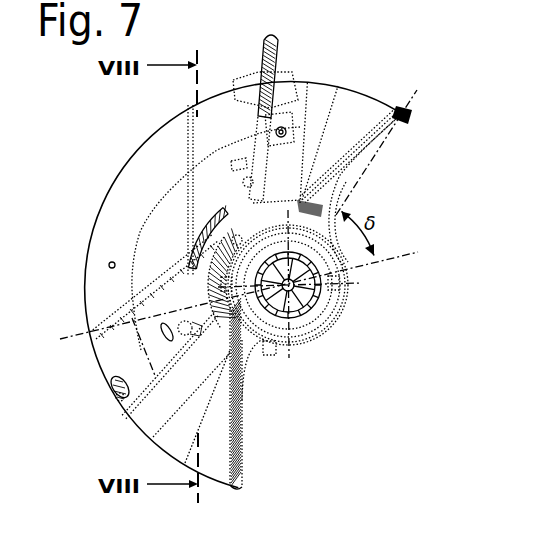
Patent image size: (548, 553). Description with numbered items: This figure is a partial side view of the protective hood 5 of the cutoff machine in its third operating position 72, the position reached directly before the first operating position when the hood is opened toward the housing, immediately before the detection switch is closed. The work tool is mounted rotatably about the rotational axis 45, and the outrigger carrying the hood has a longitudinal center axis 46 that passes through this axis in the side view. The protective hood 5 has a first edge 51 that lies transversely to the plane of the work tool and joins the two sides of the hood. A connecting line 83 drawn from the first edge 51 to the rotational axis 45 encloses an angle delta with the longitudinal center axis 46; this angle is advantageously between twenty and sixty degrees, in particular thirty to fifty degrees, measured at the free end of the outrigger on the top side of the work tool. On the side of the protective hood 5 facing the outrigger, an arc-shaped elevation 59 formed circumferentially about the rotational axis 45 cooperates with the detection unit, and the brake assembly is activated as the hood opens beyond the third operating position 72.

The protective hood 5 is at (321, 90).
The connecting line 83 is at (371, 163).
The first edge 51 is at (397, 112).
The longitudinal center axis 46 is at (399, 257).
The rotational axis 45 is at (297, 253).
The elevation 59 is at (200, 236).
The third operating position 72 is at (90, 376).